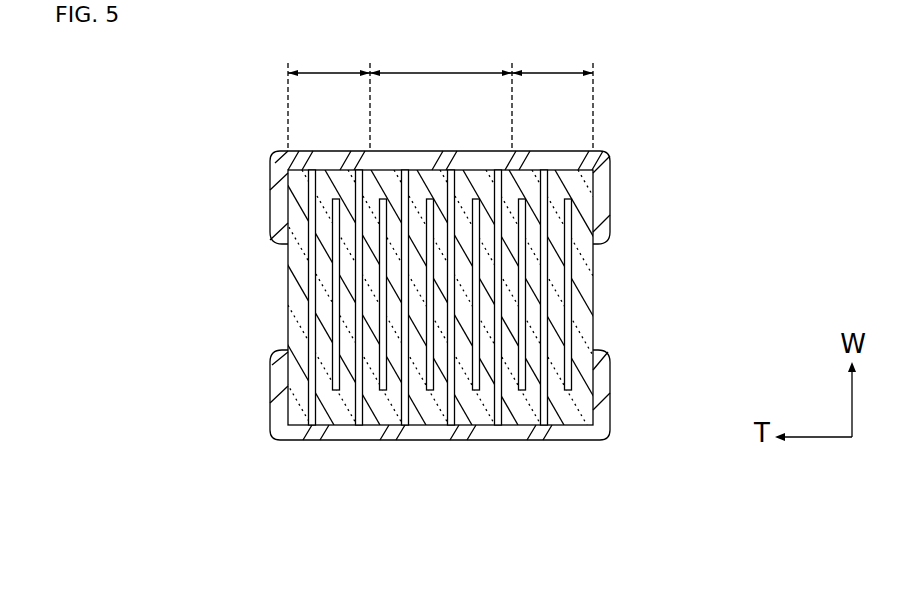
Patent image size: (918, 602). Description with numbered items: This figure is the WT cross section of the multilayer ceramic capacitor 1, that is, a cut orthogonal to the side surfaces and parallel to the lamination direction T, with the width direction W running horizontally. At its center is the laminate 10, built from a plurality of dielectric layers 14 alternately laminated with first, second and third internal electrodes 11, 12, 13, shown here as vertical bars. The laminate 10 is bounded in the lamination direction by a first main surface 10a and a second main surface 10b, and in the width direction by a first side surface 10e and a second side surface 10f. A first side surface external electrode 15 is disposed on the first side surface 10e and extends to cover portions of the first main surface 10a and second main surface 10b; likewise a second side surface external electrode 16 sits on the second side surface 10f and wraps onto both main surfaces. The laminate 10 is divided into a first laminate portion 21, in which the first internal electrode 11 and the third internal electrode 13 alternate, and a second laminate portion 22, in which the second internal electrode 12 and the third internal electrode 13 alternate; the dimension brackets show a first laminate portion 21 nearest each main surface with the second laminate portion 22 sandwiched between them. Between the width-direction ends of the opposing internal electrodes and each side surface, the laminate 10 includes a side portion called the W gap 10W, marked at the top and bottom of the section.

The multilayer ceramic capacitor 1 is at (237, 122).
The laminate 10 is at (606, 261).
The first main surface 10a is at (598, 336).
The second main surface 10b is at (287, 312).
The first side surface 10e is at (332, 428).
The second side surface 10f is at (350, 158).
The W gap 10W is at (645, 455).
The first internal electrode 11 is at (357, 268).
The second internal electrode 12 is at (455, 248).
The third internal electrode 13 is at (383, 210).
The dielectric layer 14 is at (342, 378).
The first side surface external electrode 15 is at (537, 440).
The second side surface external electrode 16 is at (545, 152).
The first laminate portion 21 is at (440, 92).
The second laminate portion 22 is at (441, 55).